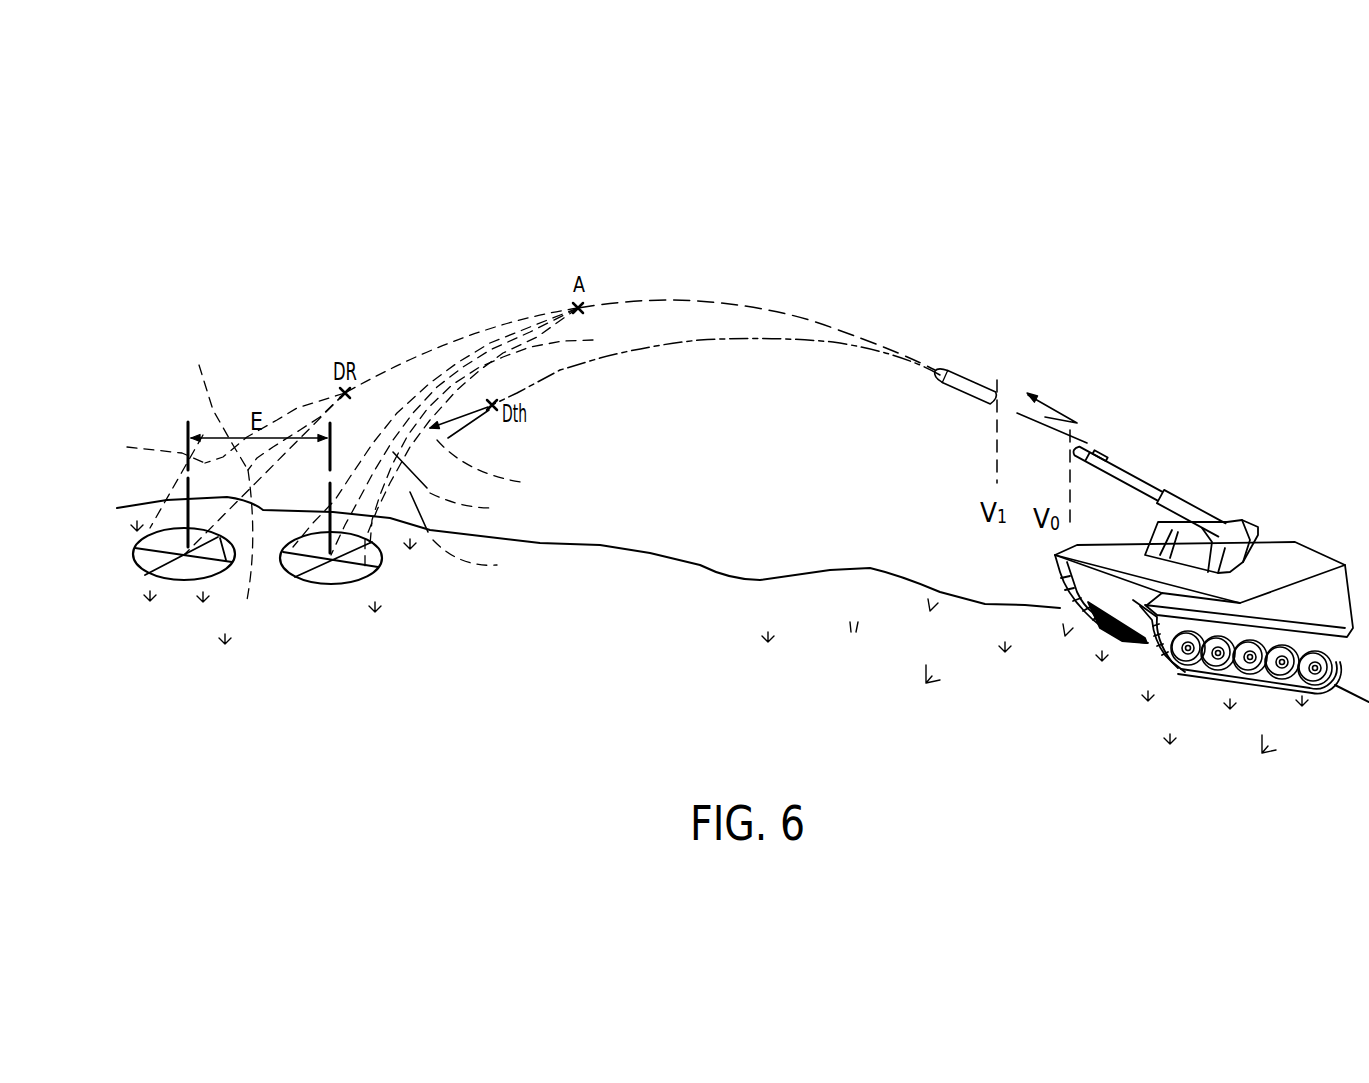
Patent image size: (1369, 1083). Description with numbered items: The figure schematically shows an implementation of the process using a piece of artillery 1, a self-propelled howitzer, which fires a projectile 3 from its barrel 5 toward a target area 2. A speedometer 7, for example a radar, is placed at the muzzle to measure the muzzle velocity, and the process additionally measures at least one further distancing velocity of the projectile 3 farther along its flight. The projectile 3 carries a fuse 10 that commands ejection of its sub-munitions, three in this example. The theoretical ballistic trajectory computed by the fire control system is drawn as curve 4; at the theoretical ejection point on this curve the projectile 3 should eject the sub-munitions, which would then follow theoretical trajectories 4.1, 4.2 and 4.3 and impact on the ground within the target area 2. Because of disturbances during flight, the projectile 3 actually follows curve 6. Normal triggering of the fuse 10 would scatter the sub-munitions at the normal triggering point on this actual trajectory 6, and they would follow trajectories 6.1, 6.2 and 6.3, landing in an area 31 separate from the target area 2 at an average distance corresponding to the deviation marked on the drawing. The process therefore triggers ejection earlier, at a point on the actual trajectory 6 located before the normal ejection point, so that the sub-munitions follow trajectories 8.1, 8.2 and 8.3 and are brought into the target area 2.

The piece of artillery 1 is at (1253, 522).
The target area 2 is at (330, 573).
The projectile 3 is at (966, 374).
The theoretical ballistic trajectory 4 is at (672, 347).
The theoretical sub-munition trajectory 4.1 is at (479, 560).
The theoretical sub-munition trajectory 4.2 is at (498, 470).
The theoretical sub-munition trajectory 4.3 is at (478, 508).
The barrel 5 is at (1123, 467).
The actual trajectory 6 is at (722, 302).
The sub-munition trajectory at normal triggering 6.1 is at (246, 550).
The sub-munition trajectory at normal triggering 6.2 is at (215, 399).
The sub-munition trajectory at normal triggering 6.3 is at (151, 447).
The speedometer 7 is at (1107, 443).
The corrected sub-munition trajectory 8.1 is at (495, 435).
The corrected sub-munition trajectory 8.2 is at (437, 378).
The corrected sub-munition trajectory 8.3 is at (390, 403).
The fuse 10 is at (936, 368).
The separate impact area 31 is at (187, 573).